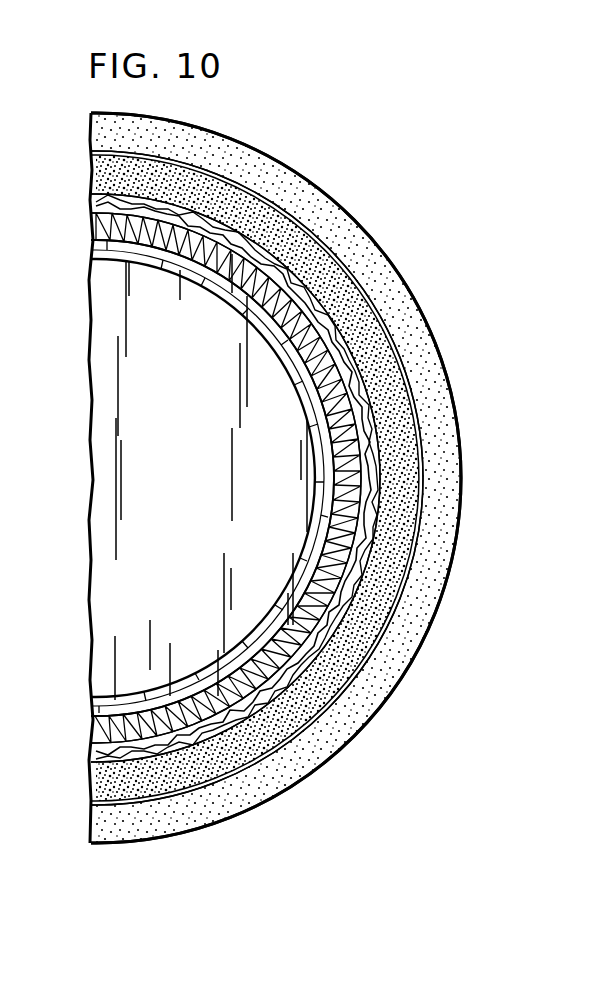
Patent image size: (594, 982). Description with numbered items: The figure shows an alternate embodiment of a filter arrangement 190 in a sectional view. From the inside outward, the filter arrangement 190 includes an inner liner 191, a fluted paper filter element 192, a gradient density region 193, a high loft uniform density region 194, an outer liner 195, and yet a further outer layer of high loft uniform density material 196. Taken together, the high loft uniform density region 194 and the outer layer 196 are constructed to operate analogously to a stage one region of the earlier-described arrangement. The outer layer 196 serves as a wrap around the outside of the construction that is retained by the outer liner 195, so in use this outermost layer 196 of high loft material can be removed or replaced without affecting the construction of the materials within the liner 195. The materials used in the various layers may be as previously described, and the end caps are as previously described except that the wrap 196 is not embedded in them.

The filter arrangement 190 is at (398, 183).
The inner liner 191 is at (380, 413).
The fluted paper filter element 192 is at (374, 494).
The gradient density region 193 is at (362, 548).
The high loft uniform density region 194 is at (393, 380).
The outer liner 195 is at (390, 342).
The outer layer of high loft uniform density material 196 is at (446, 421).